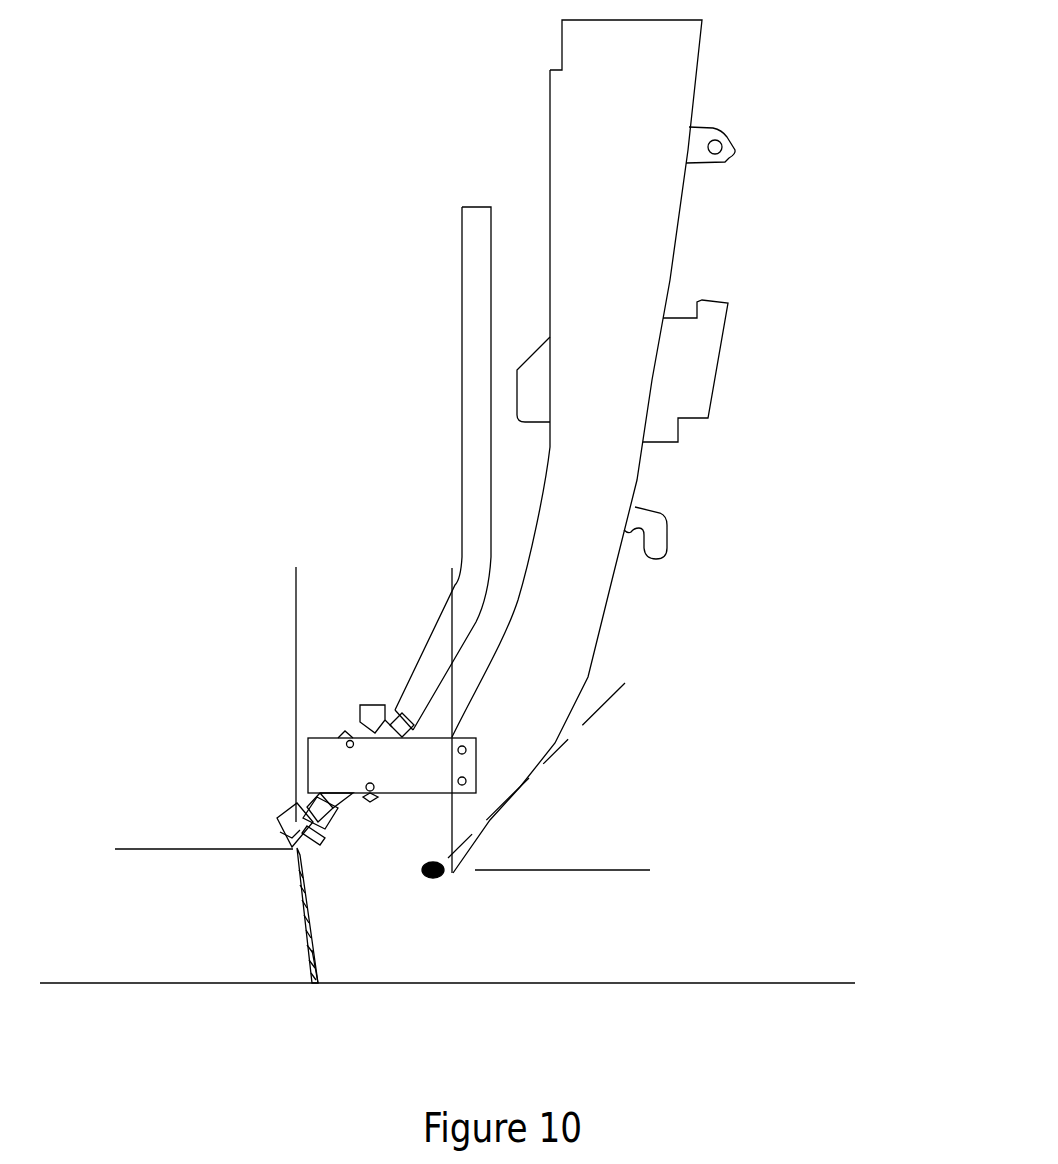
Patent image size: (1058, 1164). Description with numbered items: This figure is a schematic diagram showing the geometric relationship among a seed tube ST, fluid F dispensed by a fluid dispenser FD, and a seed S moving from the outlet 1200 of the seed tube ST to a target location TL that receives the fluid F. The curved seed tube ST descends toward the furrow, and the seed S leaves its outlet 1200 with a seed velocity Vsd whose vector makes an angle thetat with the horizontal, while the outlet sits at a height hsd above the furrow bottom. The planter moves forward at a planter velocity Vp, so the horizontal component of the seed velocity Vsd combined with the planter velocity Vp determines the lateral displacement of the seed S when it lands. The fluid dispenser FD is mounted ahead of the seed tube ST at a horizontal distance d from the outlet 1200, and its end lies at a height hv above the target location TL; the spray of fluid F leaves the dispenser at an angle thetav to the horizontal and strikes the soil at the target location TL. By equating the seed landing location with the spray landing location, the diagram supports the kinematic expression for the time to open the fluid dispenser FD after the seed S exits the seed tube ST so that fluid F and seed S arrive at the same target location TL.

The seed tube ST is at (603, 617).
The outlet of seed tube 1200 is at (450, 817).
The fluid dispenser FD is at (282, 815).
The target location TL is at (316, 985).
The fluid F is at (318, 957).
The seed S is at (438, 877).
The distance between outlet and end of fluid dispenser d is at (452, 593).
The height of end of fluid dispenser above target location hv is at (141, 849).
The height of seed above furrow bottom hsd is at (625, 870).
The angle between spray of fluid and horizontal thetav is at (300, 907).
The angle between seed velocity vector and horizontal thetat is at (558, 750).
The planter velocity Vp is at (907, 471).
The seed velocity Vsd is at (427, 877).